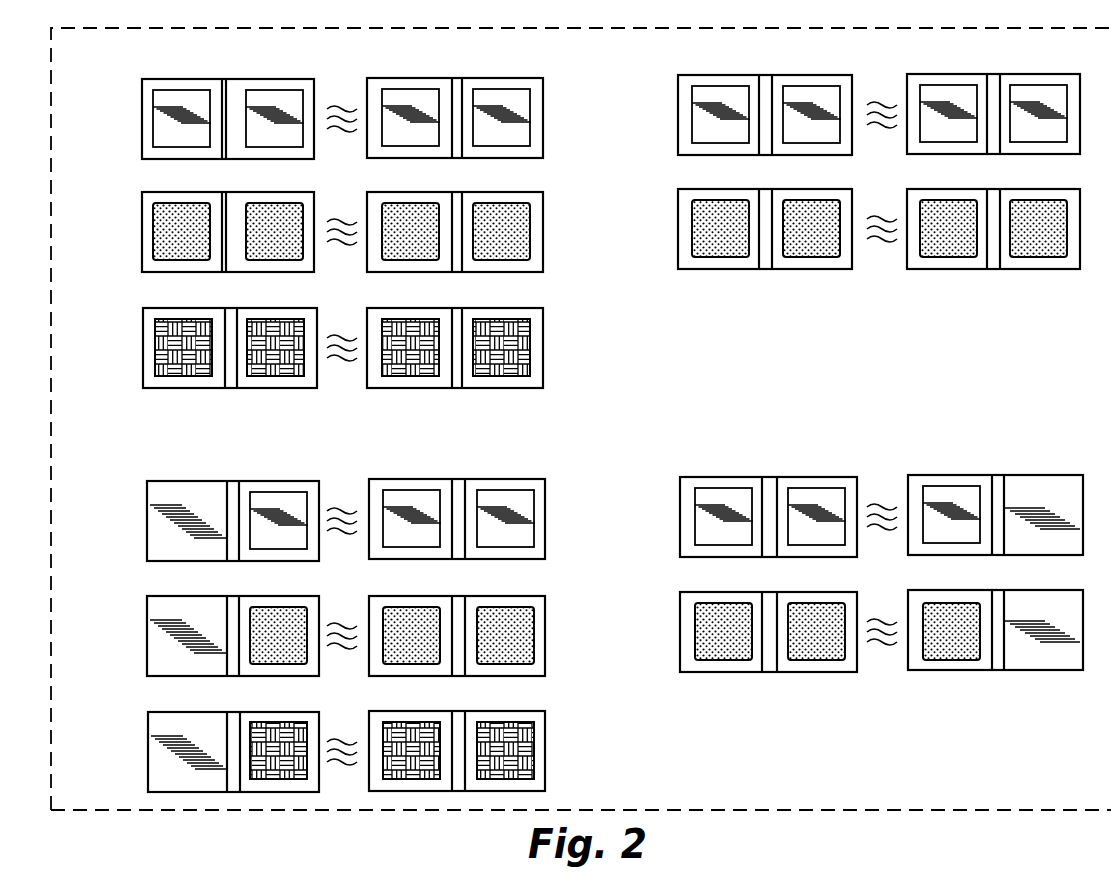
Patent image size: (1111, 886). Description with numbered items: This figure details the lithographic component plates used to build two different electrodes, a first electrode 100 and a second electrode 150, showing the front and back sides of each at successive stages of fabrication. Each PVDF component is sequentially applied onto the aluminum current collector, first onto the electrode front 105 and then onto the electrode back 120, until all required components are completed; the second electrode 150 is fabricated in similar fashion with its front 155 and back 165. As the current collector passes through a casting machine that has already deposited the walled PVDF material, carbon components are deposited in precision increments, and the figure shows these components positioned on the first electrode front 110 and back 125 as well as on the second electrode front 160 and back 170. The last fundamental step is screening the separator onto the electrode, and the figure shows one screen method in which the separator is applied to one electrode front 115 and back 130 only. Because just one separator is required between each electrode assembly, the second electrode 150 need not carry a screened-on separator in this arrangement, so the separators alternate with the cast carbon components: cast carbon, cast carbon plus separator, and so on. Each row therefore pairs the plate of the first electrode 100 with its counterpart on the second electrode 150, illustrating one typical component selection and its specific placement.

The first electrode 100 is at (358, 61).
The first electrode front 105 is at (142, 125).
The first electrode front with carbon components 110 is at (142, 238).
The first electrode front with screened separator 115 is at (143, 349).
The first electrode back 120 is at (147, 521).
The first electrode back with carbon components 125 is at (147, 643).
The first electrode back with screened separator 130 is at (148, 751).
The second electrode 150 is at (905, 57).
The second electrode front 155 is at (678, 128).
The second electrode front with carbon components 160 is at (678, 237).
The second electrode back 165 is at (680, 526).
The second electrode back with carbon components 170 is at (680, 650).